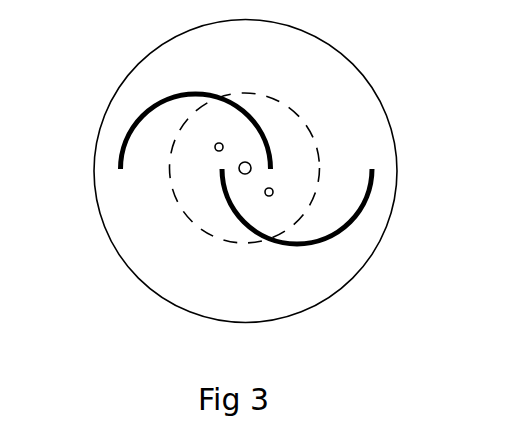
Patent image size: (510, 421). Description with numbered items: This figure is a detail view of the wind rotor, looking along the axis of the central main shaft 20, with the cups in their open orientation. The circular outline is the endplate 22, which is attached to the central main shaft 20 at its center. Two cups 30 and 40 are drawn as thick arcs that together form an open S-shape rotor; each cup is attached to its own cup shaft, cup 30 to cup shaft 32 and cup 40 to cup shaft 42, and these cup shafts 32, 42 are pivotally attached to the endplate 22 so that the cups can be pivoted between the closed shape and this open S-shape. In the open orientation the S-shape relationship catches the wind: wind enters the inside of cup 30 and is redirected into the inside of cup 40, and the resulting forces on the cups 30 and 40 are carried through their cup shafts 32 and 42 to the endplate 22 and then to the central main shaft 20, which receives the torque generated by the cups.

The central main shaft 20 is at (239, 167).
The endplate 22 is at (352, 63).
The cup 30 is at (122, 137).
The cup shaft 32 is at (218, 143).
The cup 40 is at (365, 205).
The cup shaft 42 is at (273, 189).